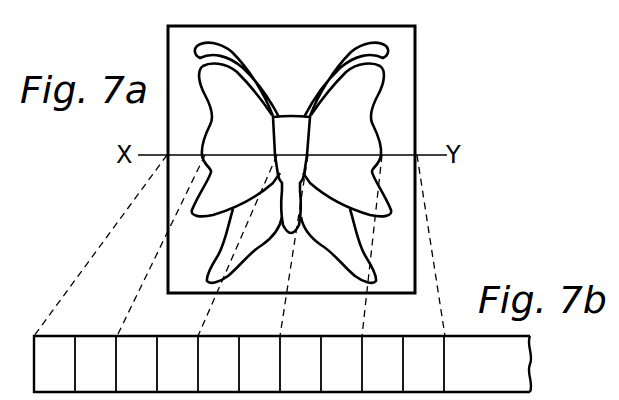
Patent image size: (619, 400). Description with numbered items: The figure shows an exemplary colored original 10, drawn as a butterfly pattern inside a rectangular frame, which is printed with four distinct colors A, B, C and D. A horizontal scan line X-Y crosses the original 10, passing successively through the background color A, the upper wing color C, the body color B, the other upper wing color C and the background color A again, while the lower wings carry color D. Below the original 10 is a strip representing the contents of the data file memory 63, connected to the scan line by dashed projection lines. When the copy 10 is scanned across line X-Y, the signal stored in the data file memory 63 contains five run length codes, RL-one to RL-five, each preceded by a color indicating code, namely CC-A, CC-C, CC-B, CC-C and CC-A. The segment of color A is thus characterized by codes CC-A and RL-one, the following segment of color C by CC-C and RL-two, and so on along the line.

In FIG. 7A, the colored original 10 is at (415, 27).
In FIG. 7B, the data file memory 63 is at (530, 340).
In FIG. 7A, the color A is at (291, 159).
In FIG. 7A, the color B is at (313, 82).
In FIG. 7A, the color C is at (292, 140).
In FIG. 7A, the color D is at (291, 246).